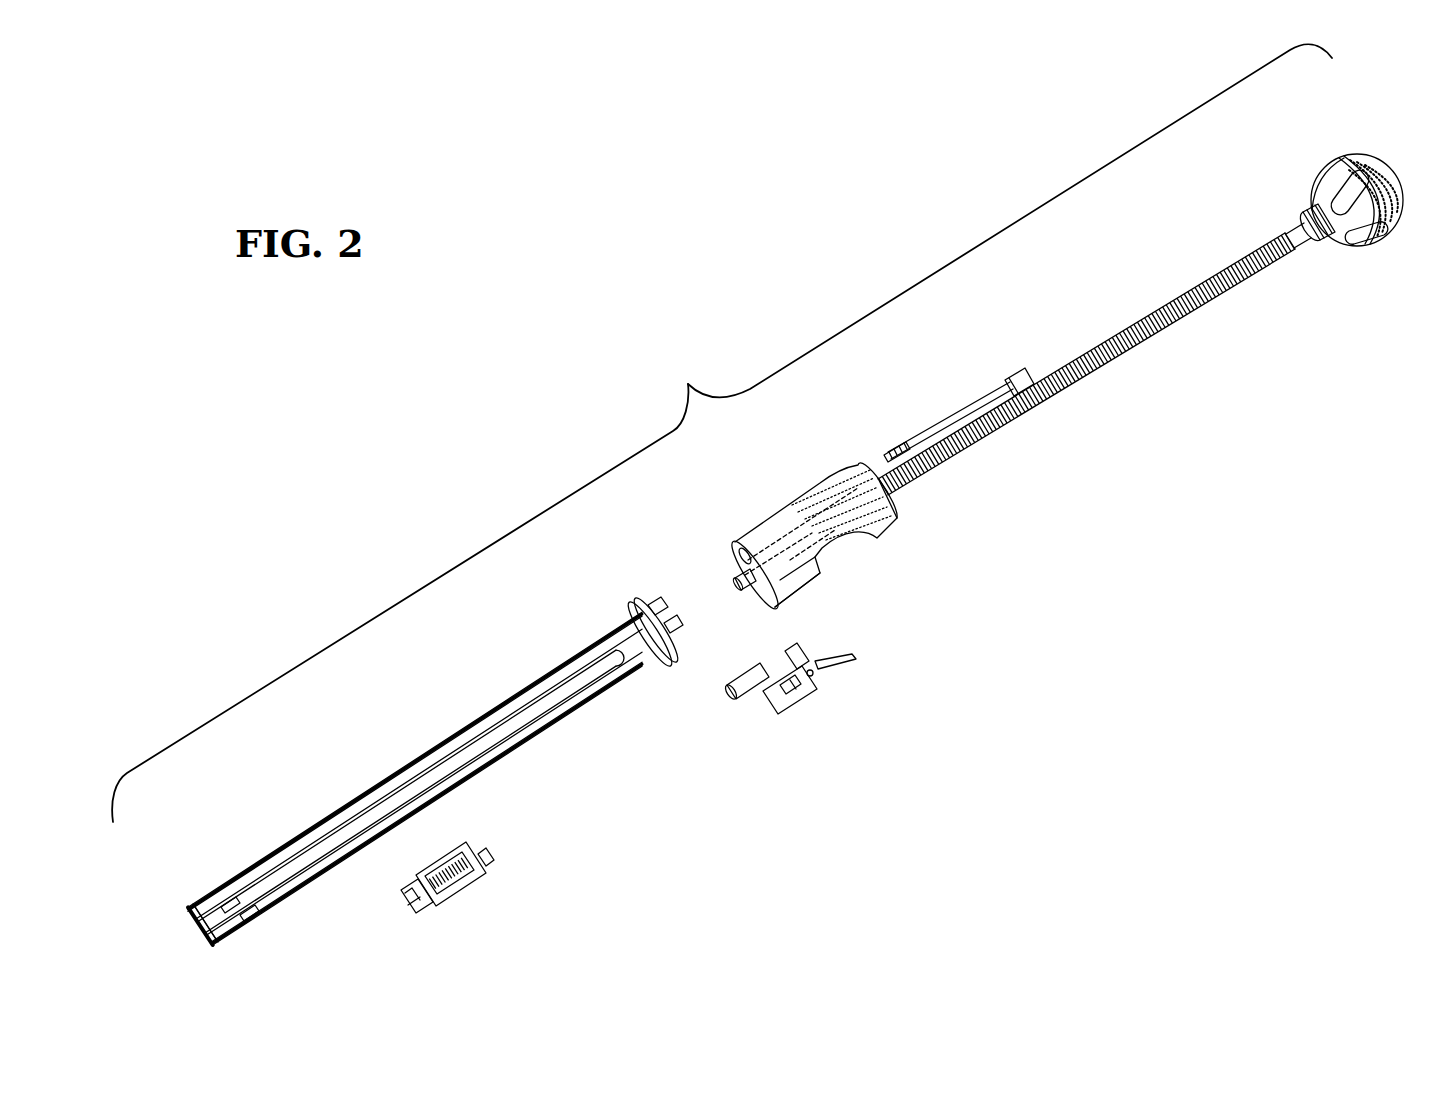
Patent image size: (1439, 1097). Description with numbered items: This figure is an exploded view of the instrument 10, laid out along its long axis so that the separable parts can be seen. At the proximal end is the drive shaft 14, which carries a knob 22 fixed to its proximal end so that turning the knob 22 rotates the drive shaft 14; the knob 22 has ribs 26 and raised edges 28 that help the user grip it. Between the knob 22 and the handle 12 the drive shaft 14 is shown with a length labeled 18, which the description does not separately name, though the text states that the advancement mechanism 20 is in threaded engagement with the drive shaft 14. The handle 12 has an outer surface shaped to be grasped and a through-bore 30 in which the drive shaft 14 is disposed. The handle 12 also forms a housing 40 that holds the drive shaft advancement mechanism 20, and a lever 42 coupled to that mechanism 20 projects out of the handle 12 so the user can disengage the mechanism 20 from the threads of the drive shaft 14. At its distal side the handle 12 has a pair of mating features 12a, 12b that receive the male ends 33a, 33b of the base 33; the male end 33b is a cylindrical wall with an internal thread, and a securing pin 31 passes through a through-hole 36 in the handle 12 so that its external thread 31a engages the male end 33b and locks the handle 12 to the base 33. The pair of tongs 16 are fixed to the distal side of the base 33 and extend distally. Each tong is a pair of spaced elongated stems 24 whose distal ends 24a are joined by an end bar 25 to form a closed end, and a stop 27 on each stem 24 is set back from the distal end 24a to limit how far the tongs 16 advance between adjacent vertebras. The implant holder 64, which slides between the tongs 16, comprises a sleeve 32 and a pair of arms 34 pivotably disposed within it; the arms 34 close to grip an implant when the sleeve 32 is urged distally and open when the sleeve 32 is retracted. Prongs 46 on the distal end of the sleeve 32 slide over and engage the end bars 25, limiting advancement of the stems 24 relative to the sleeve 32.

The instrument 10 is at (722, 433).
The handle 12 is at (840, 532).
The mating feature 12a is at (759, 591).
The mating feature 12b is at (738, 561).
The drive shaft 14 is at (1154, 276).
The pair of tongs 16 is at (773, 524).
The threaded shaft 18 is at (1161, 310).
The drive shaft advancement mechanism 20 is at (622, 745).
The knob 22 is at (1370, 184).
The elongated stem 24 is at (441, 742).
The distal end of elongated stem 24a is at (196, 907).
The end bar 25 is at (188, 917).
The rib 26 is at (1354, 248).
The stop 27 is at (229, 897).
The raised edge 28 is at (1386, 220).
The through-bore 30 is at (894, 497).
The securing pin 31 is at (958, 387).
The external thread 31a is at (894, 450).
The sleeve 32 is at (430, 859).
The base 33 is at (666, 603).
The male end 33a is at (671, 615).
The male end 33b is at (642, 605).
The pair of arms 34 is at (421, 916).
The through-hole 36 is at (836, 496).
The housing 40 is at (823, 573).
The lever 42 is at (837, 665).
The prong 46 is at (735, 682).
The implant holder 64 is at (480, 893).